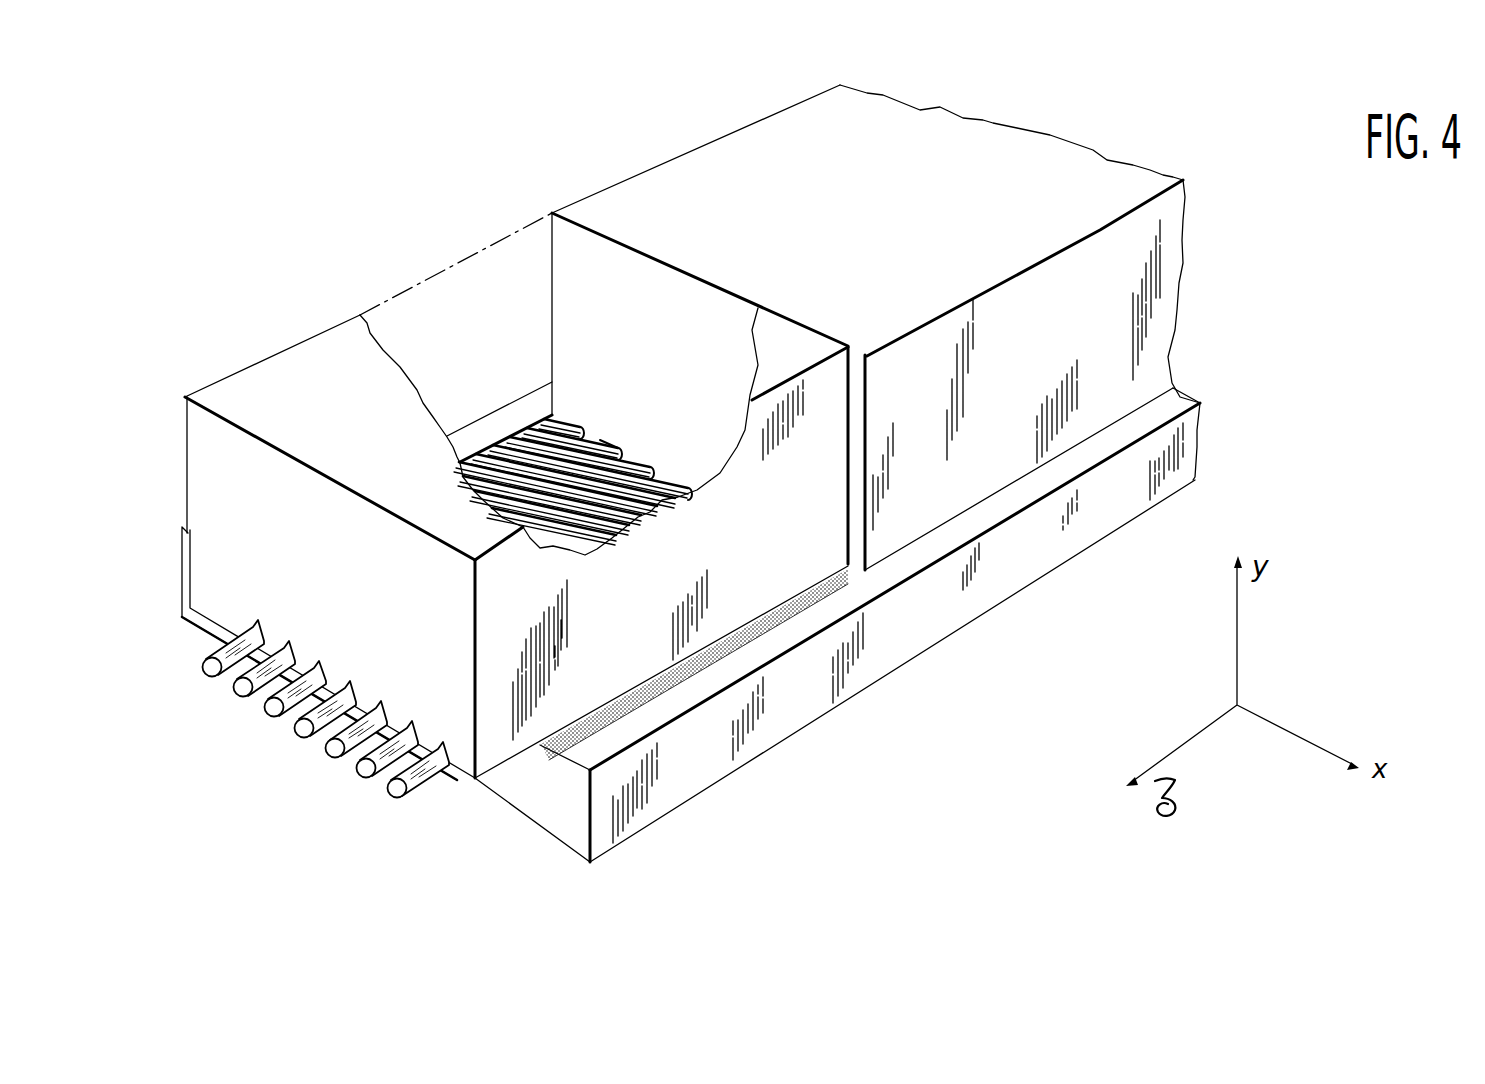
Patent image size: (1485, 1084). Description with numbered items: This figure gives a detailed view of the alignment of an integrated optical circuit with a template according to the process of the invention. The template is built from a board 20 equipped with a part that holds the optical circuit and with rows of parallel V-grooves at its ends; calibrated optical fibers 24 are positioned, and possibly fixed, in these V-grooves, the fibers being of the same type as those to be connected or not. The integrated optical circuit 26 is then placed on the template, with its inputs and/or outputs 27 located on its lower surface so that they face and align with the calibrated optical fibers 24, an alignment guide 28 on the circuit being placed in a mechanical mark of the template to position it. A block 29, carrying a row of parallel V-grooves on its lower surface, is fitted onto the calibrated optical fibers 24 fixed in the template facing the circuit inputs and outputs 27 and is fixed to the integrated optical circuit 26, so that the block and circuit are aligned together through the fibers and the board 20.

The board 20 is at (713, 750).
The calibrated optical fibers 24 is at (617, 515).
The integrated optical circuit 26 is at (738, 178).
The inputs and/or outputs 27 is at (622, 450).
The alignment guide 28 is at (553, 418).
The block 29 is at (282, 388).